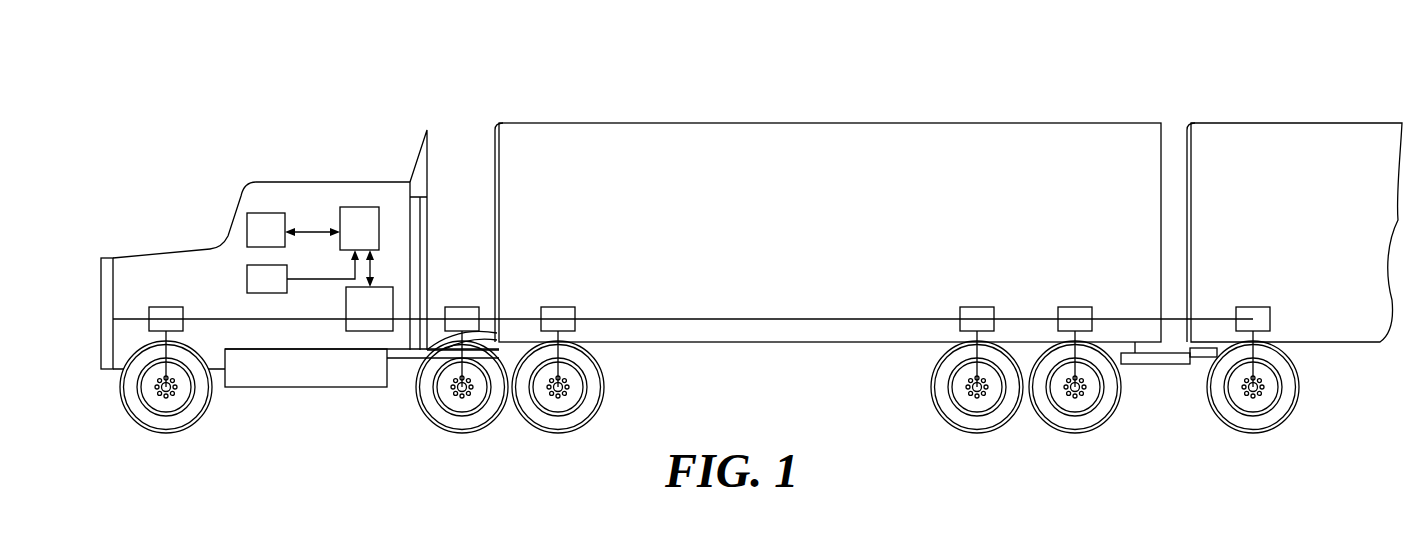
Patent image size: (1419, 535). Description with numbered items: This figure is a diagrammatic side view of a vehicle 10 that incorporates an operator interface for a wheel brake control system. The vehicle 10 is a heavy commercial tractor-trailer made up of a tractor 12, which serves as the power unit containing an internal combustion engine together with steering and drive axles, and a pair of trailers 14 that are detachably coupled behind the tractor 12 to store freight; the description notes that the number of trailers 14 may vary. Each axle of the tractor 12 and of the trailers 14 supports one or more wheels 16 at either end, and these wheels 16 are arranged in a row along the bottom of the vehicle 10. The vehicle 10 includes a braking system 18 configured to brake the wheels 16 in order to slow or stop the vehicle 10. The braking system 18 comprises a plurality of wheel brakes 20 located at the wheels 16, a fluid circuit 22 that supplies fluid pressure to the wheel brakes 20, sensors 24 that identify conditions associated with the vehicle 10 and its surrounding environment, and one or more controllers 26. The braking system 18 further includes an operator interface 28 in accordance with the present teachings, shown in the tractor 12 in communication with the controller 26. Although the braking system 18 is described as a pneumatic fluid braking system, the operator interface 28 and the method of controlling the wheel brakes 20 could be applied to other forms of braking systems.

The vehicle 10 is at (242, 140).
The tractor 12 is at (140, 257).
The trailer 14 is at (603, 122).
The wheel 16 is at (145, 408).
The braking system 18 is at (452, 224).
The wheel brake 20 is at (148, 319).
The fluid circuit 22 is at (374, 342).
The sensors 24 is at (257, 278).
The controller 26 is at (363, 217).
The operator interface 28 is at (270, 222).